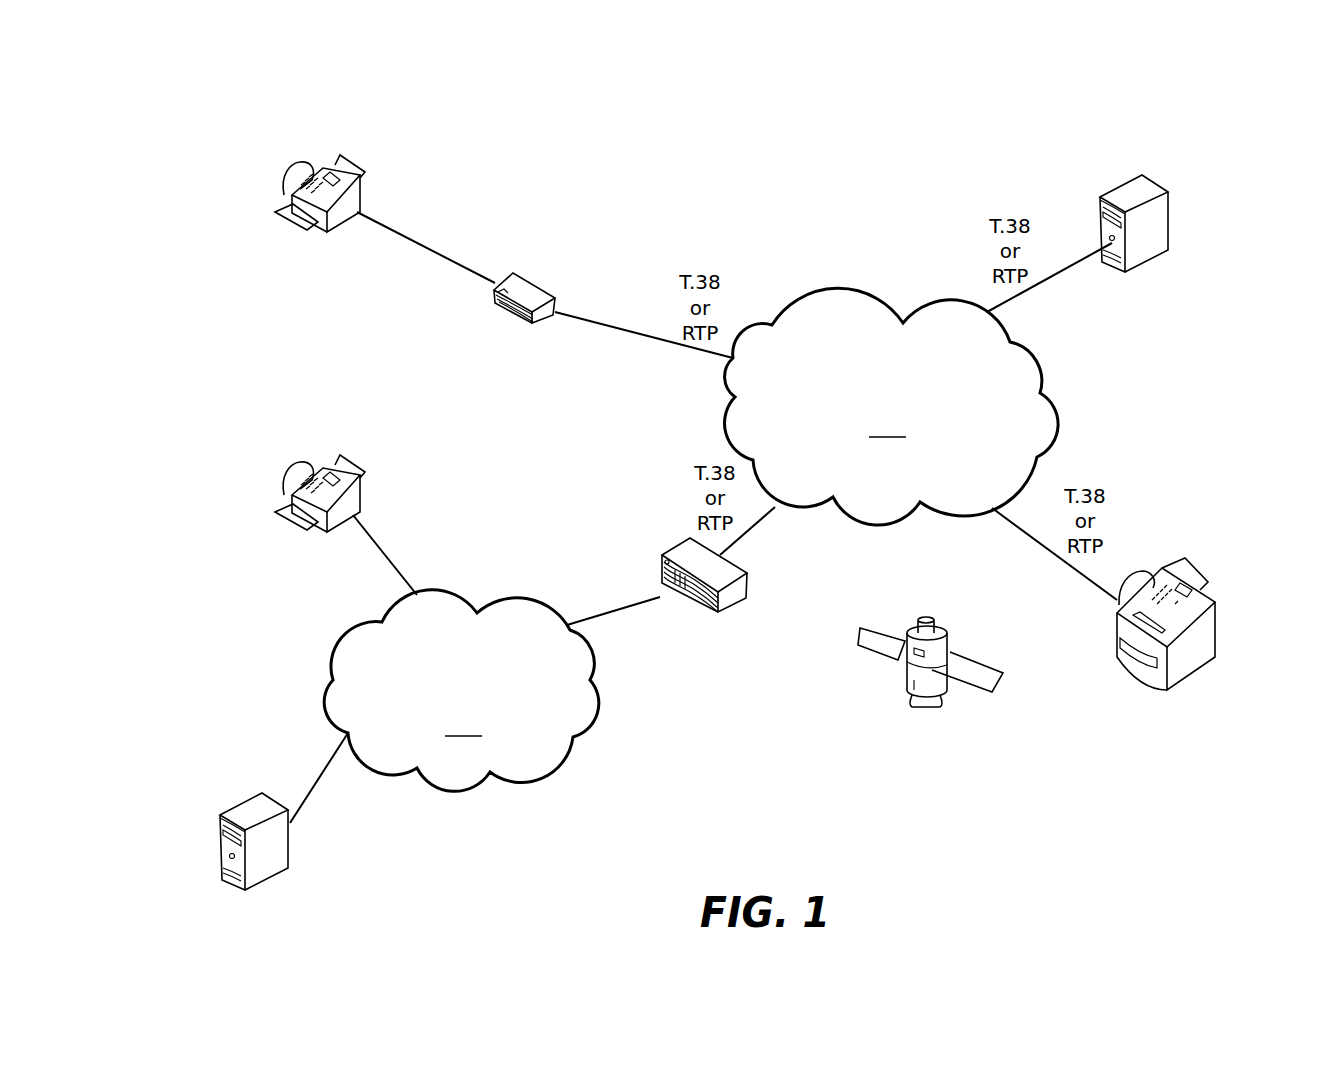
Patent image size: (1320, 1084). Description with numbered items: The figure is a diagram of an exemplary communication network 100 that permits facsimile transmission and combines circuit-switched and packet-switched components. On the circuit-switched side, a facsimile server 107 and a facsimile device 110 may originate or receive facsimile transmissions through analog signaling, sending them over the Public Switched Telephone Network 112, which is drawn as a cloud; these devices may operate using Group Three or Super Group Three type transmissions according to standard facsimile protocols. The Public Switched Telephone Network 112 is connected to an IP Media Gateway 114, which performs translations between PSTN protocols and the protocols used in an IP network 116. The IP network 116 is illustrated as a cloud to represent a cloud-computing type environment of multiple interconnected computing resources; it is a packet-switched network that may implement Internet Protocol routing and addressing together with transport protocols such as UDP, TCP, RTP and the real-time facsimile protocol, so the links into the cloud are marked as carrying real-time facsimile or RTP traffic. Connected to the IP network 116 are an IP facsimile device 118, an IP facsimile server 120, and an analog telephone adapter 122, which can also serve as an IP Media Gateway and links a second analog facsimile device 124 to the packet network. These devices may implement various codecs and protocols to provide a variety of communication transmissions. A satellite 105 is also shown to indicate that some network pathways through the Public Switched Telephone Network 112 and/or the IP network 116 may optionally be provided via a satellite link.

The communication network 100 is at (645, 420).
The satellite 105 is at (938, 625).
The facsimile server 107 is at (275, 846).
The facsimile device 110 is at (363, 500).
The Public Switched Telephone Network 112 is at (461, 691).
The IP Media Gateway 114 is at (735, 588).
The IP network 116 is at (892, 406).
The IP facsimile device 118 is at (1207, 647).
The IP facsimile server 120 is at (1148, 228).
The analog telephone adapter 122 is at (522, 292).
The facsimile device 124 is at (361, 196).